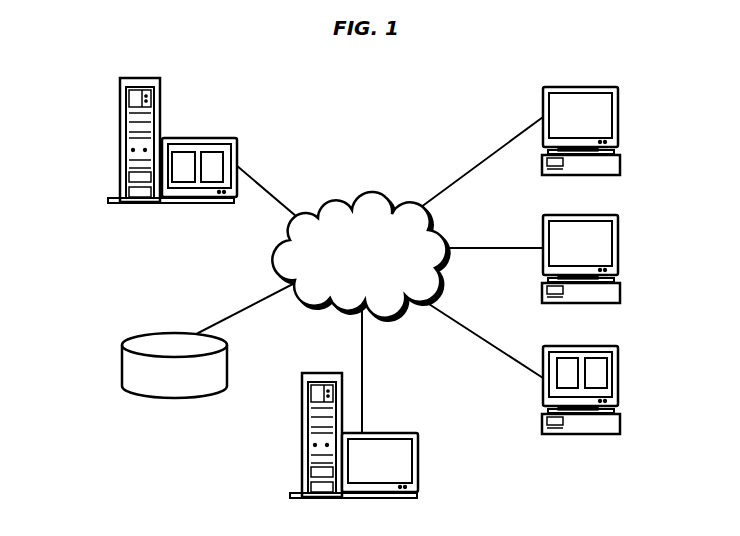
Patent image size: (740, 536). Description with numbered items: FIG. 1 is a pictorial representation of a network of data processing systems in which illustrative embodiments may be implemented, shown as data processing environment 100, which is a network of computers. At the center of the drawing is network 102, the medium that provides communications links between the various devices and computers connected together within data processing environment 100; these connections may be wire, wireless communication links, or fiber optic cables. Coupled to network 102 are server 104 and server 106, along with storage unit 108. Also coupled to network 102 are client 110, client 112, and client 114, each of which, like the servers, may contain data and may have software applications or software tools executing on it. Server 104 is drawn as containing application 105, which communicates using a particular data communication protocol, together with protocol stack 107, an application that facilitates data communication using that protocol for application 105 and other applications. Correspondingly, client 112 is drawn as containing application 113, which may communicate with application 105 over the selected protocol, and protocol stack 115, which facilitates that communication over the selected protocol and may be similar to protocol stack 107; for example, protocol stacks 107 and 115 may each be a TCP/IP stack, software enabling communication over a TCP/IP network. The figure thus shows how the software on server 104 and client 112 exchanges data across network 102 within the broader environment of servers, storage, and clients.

The data processing environment 100 is at (75, 97).
The network 102 is at (360, 256).
The server 104 is at (172, 150).
The application 105 is at (223, 160).
The server 106 is at (354, 446).
The protocol stack 107 is at (188, 152).
The storage unit 108 is at (174, 365).
The client 110 is at (581, 265).
The client 112 is at (581, 397).
The application 113 is at (607, 373).
The client 114 is at (581, 138).
The protocol stack 115 is at (557, 380).